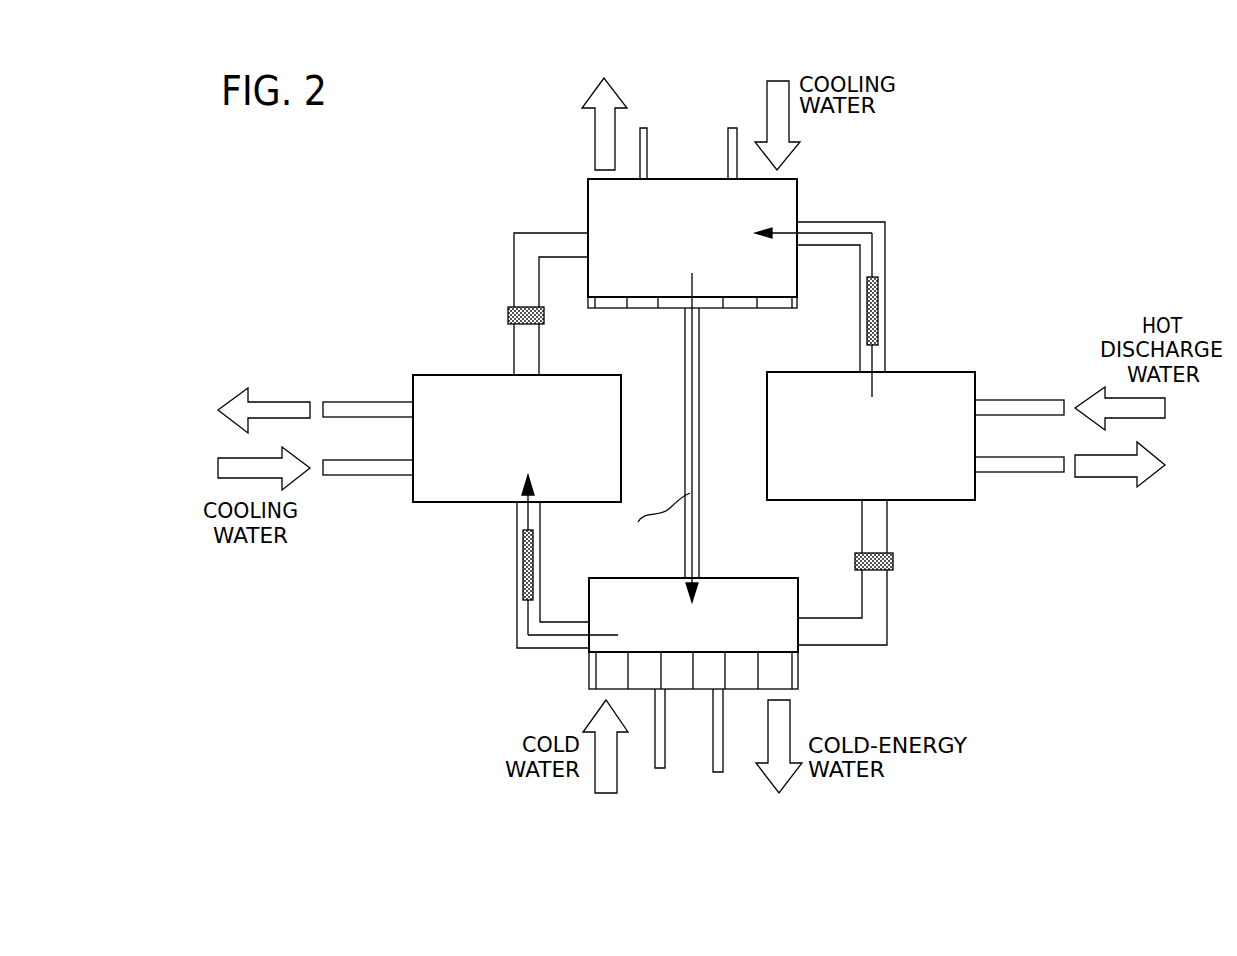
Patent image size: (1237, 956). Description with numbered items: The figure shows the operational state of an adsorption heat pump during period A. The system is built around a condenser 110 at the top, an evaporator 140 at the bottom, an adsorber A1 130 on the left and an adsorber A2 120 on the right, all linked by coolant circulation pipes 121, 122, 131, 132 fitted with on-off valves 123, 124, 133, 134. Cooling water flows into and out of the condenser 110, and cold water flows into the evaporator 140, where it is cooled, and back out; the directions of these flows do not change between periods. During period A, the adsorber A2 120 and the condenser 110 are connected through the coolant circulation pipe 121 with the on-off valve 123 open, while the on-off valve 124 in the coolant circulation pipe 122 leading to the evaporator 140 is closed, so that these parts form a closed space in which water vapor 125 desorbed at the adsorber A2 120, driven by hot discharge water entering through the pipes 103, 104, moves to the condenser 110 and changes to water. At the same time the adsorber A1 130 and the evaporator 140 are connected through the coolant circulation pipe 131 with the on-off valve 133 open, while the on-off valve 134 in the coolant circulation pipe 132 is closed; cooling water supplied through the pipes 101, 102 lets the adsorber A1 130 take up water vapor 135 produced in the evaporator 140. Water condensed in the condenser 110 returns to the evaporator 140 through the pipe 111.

The condenser 110 is at (782, 197).
The pipe 111 is at (683, 377).
The adsorber A2 120 is at (830, 382).
The coolant circulation pipe 121 is at (883, 272).
The coolant circulation pipe 122 is at (885, 595).
The on-off valve 123 is at (875, 307).
The on-off valve 124 is at (893, 555).
The water vapor 125 is at (873, 242).
The adsorber A1 130 is at (500, 381).
The coolant circulation pipe 131 is at (525, 577).
The coolant circulation pipe 132 is at (515, 252).
The on-off valve 133 is at (522, 548).
The on-off valve 134 is at (508, 308).
The water vapor 135 is at (528, 610).
The evaporator 140 is at (732, 580).
The cooling water outlet pipe 101 is at (378, 410).
The cooling water inlet pipe 102 is at (378, 470).
The hot discharge water inlet pipe 103 is at (1008, 408).
The hot discharge water outlet pipe 104 is at (1008, 465).